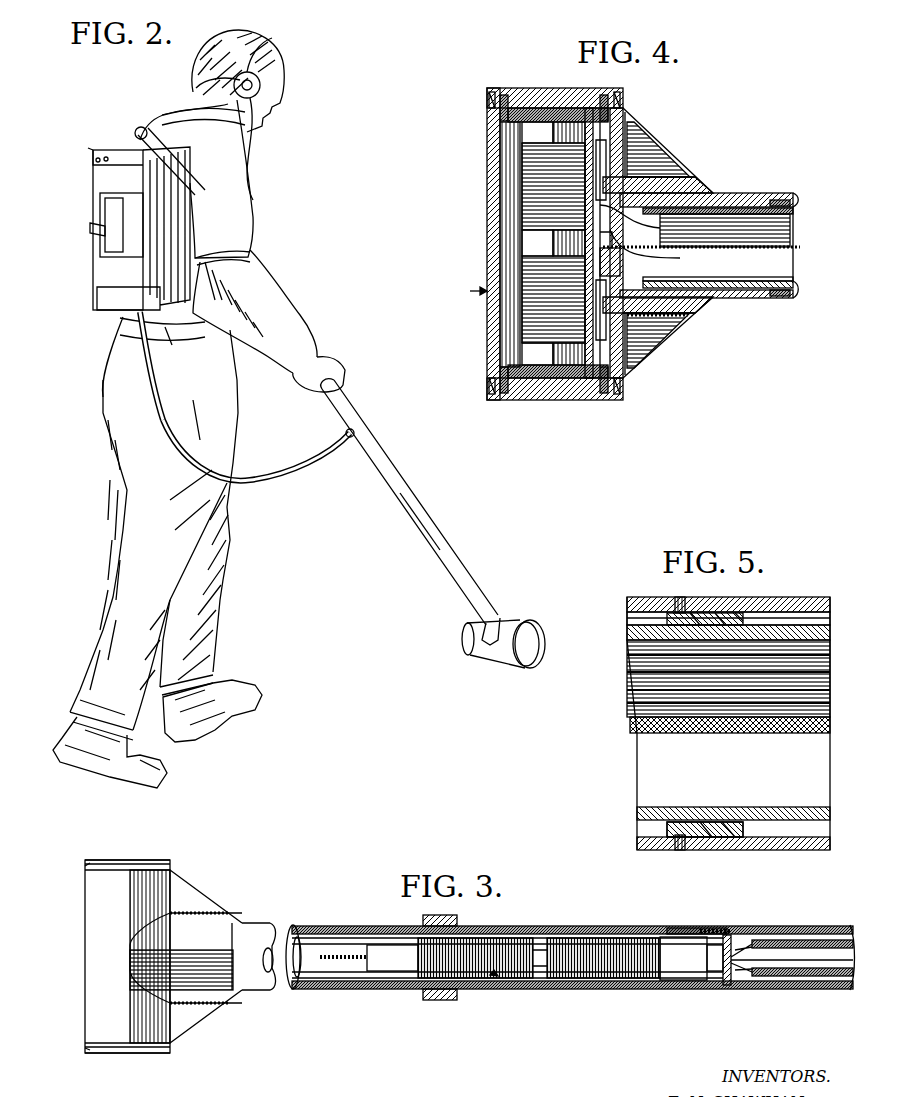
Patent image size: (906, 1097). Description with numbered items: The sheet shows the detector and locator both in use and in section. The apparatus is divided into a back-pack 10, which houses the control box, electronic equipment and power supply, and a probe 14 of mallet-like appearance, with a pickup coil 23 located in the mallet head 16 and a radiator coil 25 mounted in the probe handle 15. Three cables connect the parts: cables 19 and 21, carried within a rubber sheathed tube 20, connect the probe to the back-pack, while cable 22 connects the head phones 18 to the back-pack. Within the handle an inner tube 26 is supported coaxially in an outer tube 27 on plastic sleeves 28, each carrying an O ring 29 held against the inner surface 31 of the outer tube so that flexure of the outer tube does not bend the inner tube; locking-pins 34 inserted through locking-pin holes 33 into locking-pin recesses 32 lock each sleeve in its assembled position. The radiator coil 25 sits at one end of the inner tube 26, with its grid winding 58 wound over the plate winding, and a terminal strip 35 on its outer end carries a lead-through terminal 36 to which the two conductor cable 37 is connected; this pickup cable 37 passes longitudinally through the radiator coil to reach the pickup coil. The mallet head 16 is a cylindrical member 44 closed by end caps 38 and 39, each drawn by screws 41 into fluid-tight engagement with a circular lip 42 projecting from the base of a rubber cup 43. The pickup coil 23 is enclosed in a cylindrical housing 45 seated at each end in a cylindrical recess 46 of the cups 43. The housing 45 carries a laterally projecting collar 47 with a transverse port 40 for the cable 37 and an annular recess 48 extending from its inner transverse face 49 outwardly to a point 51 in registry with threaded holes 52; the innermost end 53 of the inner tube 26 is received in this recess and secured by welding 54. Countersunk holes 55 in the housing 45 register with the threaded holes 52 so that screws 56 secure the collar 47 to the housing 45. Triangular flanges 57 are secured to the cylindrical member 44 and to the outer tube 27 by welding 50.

In FIG. 2, the back-pack 10 is at (114, 282).
In FIG. 2, the probe 14 is at (432, 516).
In FIG. 3, the probe 14 is at (553, 922).
In FIG. 2, the probe handle 15 is at (420, 545).
In FIG. 2, the mallet head 16 is at (540, 628).
In FIG. 4, the mallet head 16 is at (470, 291).
In FIG. 2, the head phones 18 is at (280, 78).
In FIG. 3, the cable 19 is at (815, 940).
In FIG. 2, the rubber sheathed tube 20 is at (250, 478).
In FIG. 3, the cable 21 is at (805, 978).
In FIG. 2, the cable 22 is at (181, 348).
In FIG. 4, the pickup coil 23 is at (530, 205).
In FIG. 3, the radiator coil 25 is at (494, 976).
In FIG. 4, the inner tube 26 is at (795, 285).
In FIG. 5, the inner tube 26 is at (775, 810).
In FIG. 3, the inner tube 26 is at (480, 980).
In FIG. 4, the outer tube 27 is at (761, 194).
In FIG. 5, the outer tube 27 is at (648, 597).
In FIG. 3, the outer tube 27 is at (558, 988).
In FIG. 4, the plastic sleeves 28 is at (785, 203).
In FIG. 5, the plastic sleeves 28 is at (760, 618).
In FIG. 3, the plastic sleeves 28 is at (342, 933).
In FIG. 4, the O ring 29 is at (778, 298).
In FIG. 5, the O ring 29 is at (718, 822).
In FIG. 4, the inner surface of the outer tube 31 is at (795, 294).
In FIG. 5, the inner surface of the outer tube 31 is at (797, 845).
In FIG. 5, the locking-pin recesses 32 is at (660, 621).
In FIG. 5, the locking-pin holes 33 is at (697, 600).
In FIG. 5, the locking-pins 34 is at (683, 597).
In FIG. 3, the terminal strip 35 is at (708, 985).
In FIG. 3, the lead-through terminal 36 is at (752, 959).
In FIG. 4, the two conductor cable 37 is at (800, 247).
In FIG. 5, the two conductor cable 37 is at (667, 733).
In FIG. 3, the two conductor cable 37 is at (331, 966).
In FIG. 4, the end cap 38 is at (558, 88).
In FIG. 4, the end cap 39 is at (560, 400).
In FIG. 4, the transverse port 40 is at (600, 245).
In FIG. 4, the screws 41 is at (494, 92).
In FIG. 4, the circular lip 42 is at (500, 103).
In FIG. 4, the rubber cup 43 is at (548, 113).
In FIG. 4, the cylindrical member 44 is at (487, 320).
In FIG. 4, the cylindrical housing 45 is at (522, 229).
In FIG. 4, the cylindrical recess 46 is at (570, 130).
In FIG. 4, the collar 47 is at (645, 255).
In FIG. 4, the annular recess 48 is at (640, 228).
In FIG. 4, the inner transverse face 49 is at (650, 268).
In FIG. 4, the welding 50 is at (628, 160).
In FIG. 4, the point 51 is at (648, 178).
In FIG. 4, the threaded holes 52 is at (636, 318).
In FIG. 4, the innermost end of the inner tube 53 is at (690, 305).
In FIG. 4, the welding 54 is at (690, 180).
In FIG. 4, the countersunk holes 55 is at (606, 246).
In FIG. 4, the screws 56 is at (616, 278).
In FIG. 4, the triangular flanges 57 is at (662, 150).
In FIG. 3, the grid winding 58 is at (598, 940).